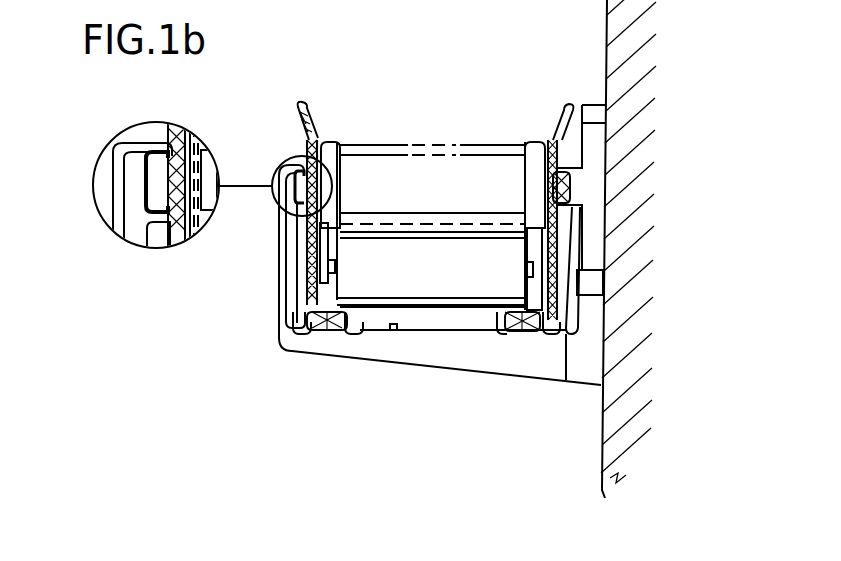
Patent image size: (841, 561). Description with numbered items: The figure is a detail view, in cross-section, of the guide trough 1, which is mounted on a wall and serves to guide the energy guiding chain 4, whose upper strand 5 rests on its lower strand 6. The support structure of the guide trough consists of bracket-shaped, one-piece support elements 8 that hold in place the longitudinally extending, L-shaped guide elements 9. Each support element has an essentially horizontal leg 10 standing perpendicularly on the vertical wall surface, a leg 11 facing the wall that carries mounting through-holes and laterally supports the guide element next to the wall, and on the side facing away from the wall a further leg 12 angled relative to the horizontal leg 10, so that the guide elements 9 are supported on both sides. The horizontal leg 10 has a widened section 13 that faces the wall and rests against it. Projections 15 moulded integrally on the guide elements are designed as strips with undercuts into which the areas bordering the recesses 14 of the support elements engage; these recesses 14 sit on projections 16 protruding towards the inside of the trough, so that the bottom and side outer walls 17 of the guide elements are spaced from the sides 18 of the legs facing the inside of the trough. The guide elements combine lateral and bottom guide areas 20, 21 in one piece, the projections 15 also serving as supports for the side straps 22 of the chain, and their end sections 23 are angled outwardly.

The guide trough 1 is at (396, 378).
The energy guiding chain 4 is at (417, 138).
The upper strand 5 is at (540, 212).
The lower strand 6 is at (542, 297).
The support element 8 is at (276, 299).
The guide element 9 is at (283, 235).
The horizontal leg 10 is at (427, 360).
The leg facing vertical surface 11 is at (598, 158).
The leg 12 is at (283, 272).
The widened section 13 is at (573, 370).
The recess 14 is at (157, 190).
The projection 15 is at (160, 172).
The projection 16 is at (580, 185).
The bottom and side outer walls 17 is at (560, 274).
The sides of legs 18 is at (398, 326).
The lateral guide area 20 is at (312, 294).
The bottom guide area 21 is at (326, 313).
The side strap 22 is at (546, 306).
The end section 23 is at (296, 113).